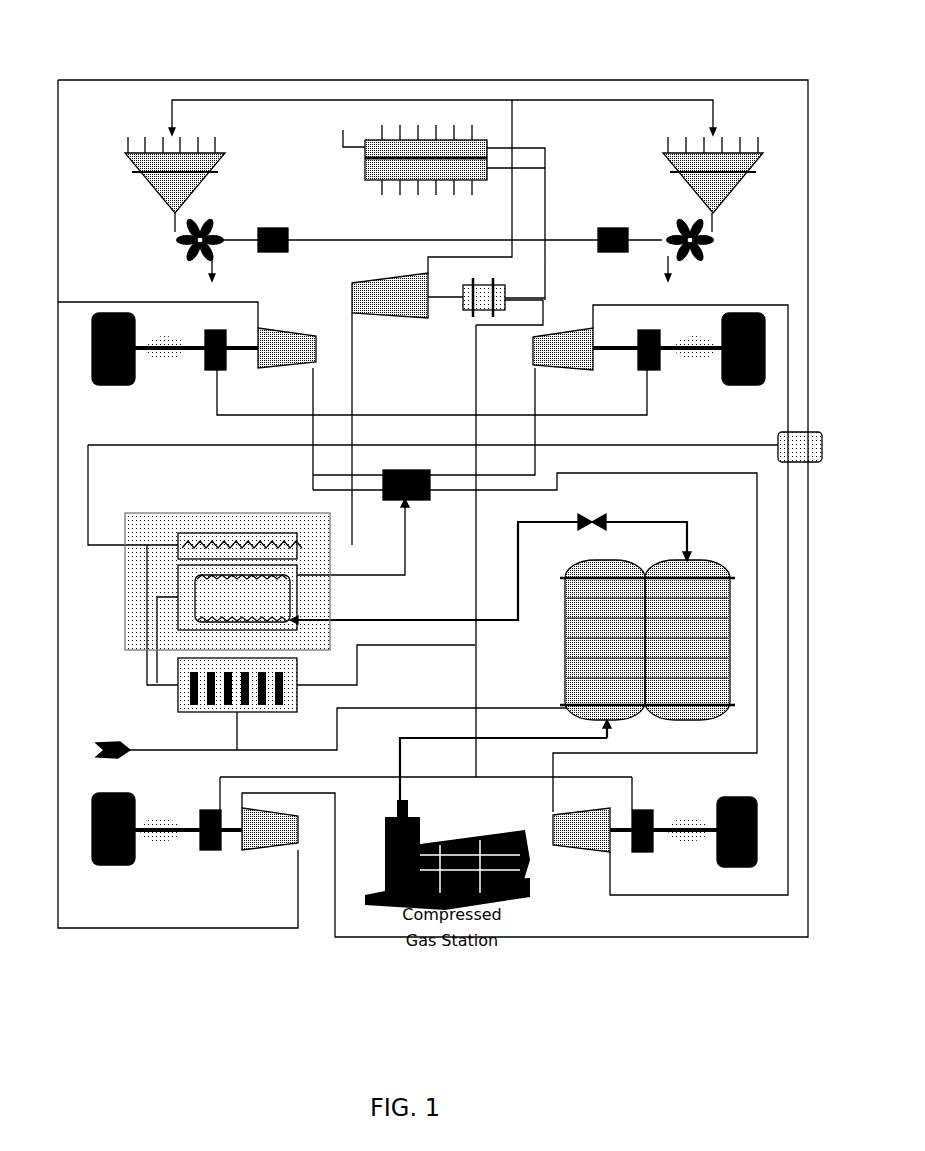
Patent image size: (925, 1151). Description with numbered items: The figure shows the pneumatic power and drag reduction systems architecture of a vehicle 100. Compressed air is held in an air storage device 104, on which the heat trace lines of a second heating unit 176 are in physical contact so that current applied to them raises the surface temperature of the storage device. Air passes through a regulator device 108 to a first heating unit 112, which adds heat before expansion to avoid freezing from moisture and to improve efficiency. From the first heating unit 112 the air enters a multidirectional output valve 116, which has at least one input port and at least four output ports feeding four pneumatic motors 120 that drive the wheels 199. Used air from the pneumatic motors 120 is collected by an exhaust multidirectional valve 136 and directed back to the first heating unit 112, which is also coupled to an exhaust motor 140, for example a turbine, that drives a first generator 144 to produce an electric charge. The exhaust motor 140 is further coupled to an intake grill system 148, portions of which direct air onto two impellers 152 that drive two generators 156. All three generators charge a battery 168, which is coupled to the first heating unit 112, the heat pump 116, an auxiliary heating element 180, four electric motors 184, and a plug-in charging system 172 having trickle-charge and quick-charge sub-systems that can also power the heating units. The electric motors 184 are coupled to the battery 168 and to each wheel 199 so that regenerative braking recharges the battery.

The vehicle 100 is at (58, 76).
The air storage device 104 is at (687, 566).
The regulator device 108 is at (600, 515).
The first heating unit 112 is at (300, 565).
The multidirectional output valve 116 is at (441, 149).
The pneumatic motors 120 is at (282, 355).
The exhaust multidirectional valve 136 is at (795, 451).
The exhaust motor 140 is at (395, 298).
The first generator 144 is at (470, 308).
The intake grill system 148 is at (175, 171).
The impellers 152 is at (190, 240).
The generators 156 is at (273, 228).
The battery 168 is at (258, 700).
The plug-in charging system 172 is at (108, 742).
The second heating unit 176 is at (630, 677).
The auxiliary heating element 180 is at (418, 165).
The electric motors 184 is at (207, 333).
The wheels 199 is at (92, 348).